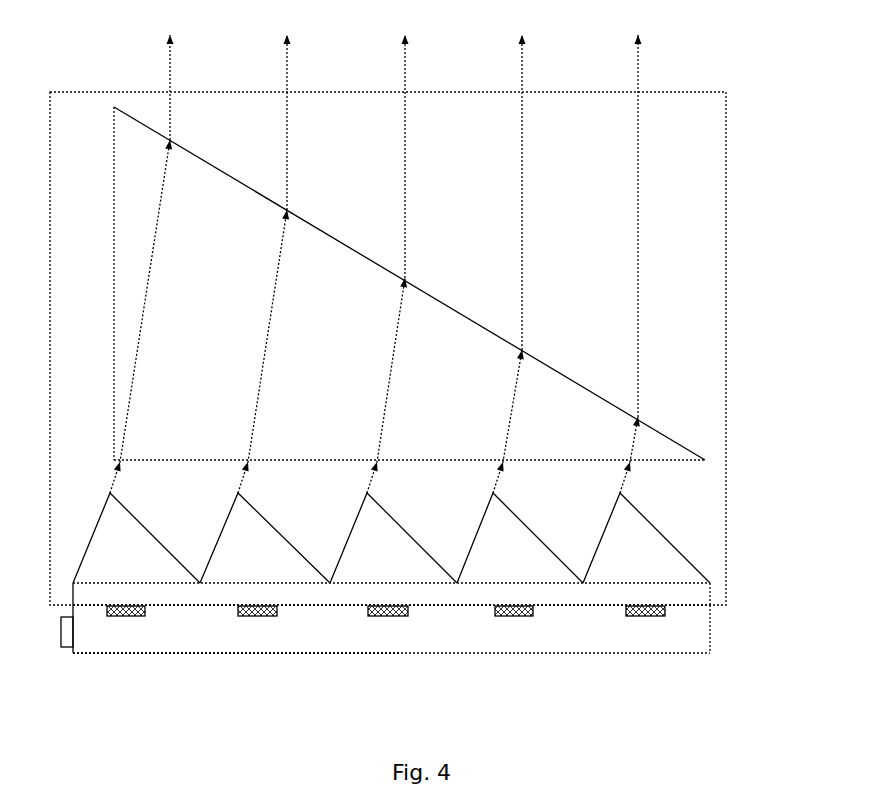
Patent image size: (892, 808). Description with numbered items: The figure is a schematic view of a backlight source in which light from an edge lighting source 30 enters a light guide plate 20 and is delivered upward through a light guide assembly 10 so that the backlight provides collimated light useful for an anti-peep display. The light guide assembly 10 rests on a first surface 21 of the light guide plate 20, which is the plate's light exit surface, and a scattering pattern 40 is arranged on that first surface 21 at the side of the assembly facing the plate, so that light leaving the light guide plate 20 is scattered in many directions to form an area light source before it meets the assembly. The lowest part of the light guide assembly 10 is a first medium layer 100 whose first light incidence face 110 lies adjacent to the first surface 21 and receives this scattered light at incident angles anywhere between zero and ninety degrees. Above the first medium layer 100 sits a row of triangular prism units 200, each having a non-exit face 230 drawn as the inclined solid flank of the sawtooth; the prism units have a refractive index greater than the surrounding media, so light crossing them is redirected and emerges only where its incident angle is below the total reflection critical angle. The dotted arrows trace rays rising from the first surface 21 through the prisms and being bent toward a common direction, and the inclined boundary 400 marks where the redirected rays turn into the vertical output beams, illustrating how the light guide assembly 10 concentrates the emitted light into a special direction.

The light guide assembly 10 is at (727, 310).
The light guide plate 20 is at (630, 635).
The first surface 21 is at (553, 605).
The light source 30 is at (70, 640).
The scattering pattern 40 is at (122, 616).
The first medium layer 100 is at (213, 596).
The first light incidence face 110 is at (670, 606).
The triangular prism unit 200 is at (391, 532).
The non-exit face 230 is at (410, 532).
The light exit boundary 400 is at (553, 395).